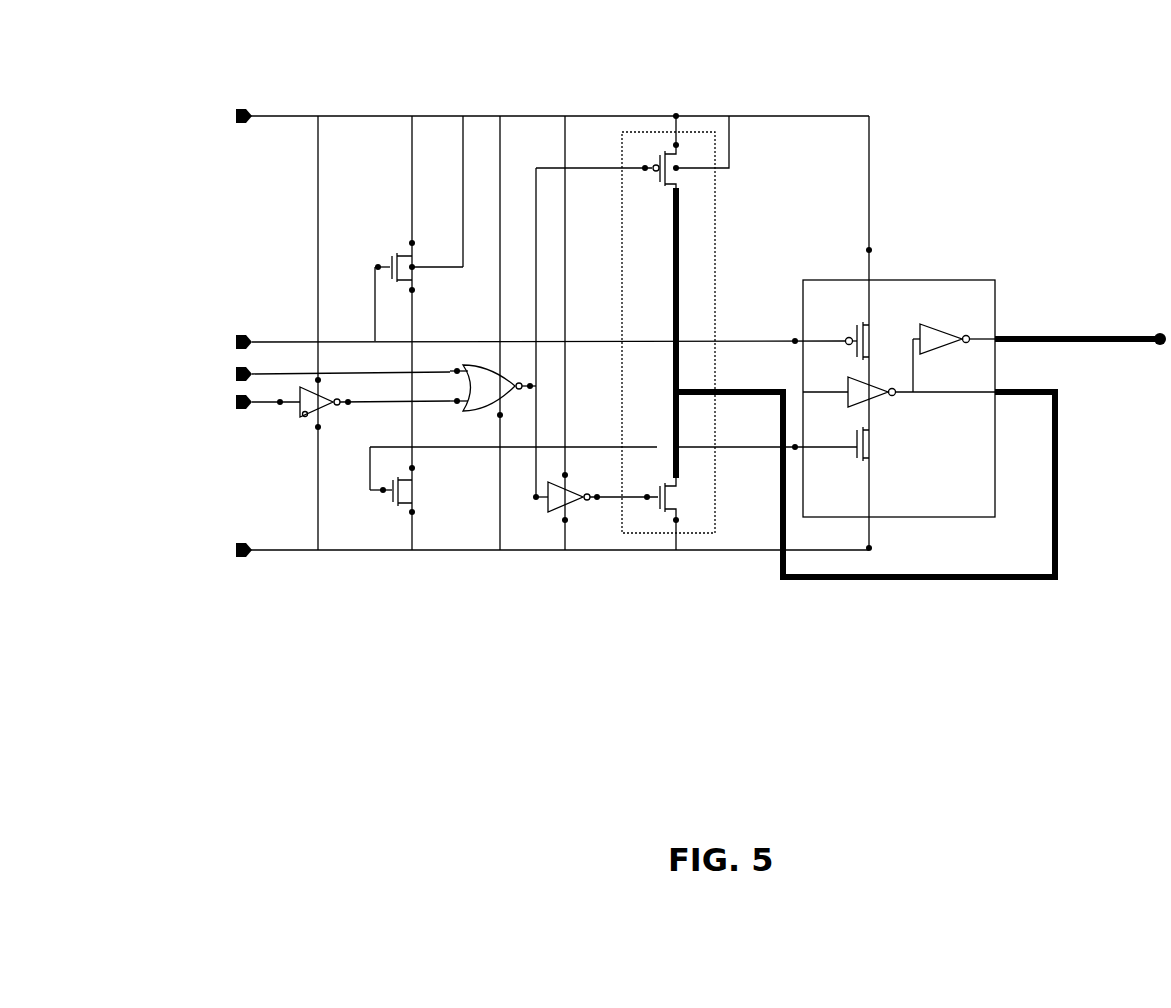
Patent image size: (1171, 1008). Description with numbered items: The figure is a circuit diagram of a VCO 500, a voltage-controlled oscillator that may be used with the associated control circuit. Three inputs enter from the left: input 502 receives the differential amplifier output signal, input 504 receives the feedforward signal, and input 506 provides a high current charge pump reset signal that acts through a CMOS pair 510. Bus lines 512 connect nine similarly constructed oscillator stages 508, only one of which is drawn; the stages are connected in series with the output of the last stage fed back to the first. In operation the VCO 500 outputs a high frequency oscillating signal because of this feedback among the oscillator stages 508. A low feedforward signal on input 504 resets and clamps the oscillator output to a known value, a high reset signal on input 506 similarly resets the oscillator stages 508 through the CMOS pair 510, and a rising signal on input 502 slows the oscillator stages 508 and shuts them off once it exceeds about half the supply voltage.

The VCO 500 is at (1082, 220).
The input 502 is at (244, 333).
The input 504 is at (240, 408).
The input 506 is at (235, 375).
The oscillator stage 508 is at (915, 278).
The CMOS pair 510 is at (695, 130).
The bus lines 512 is at (735, 390).